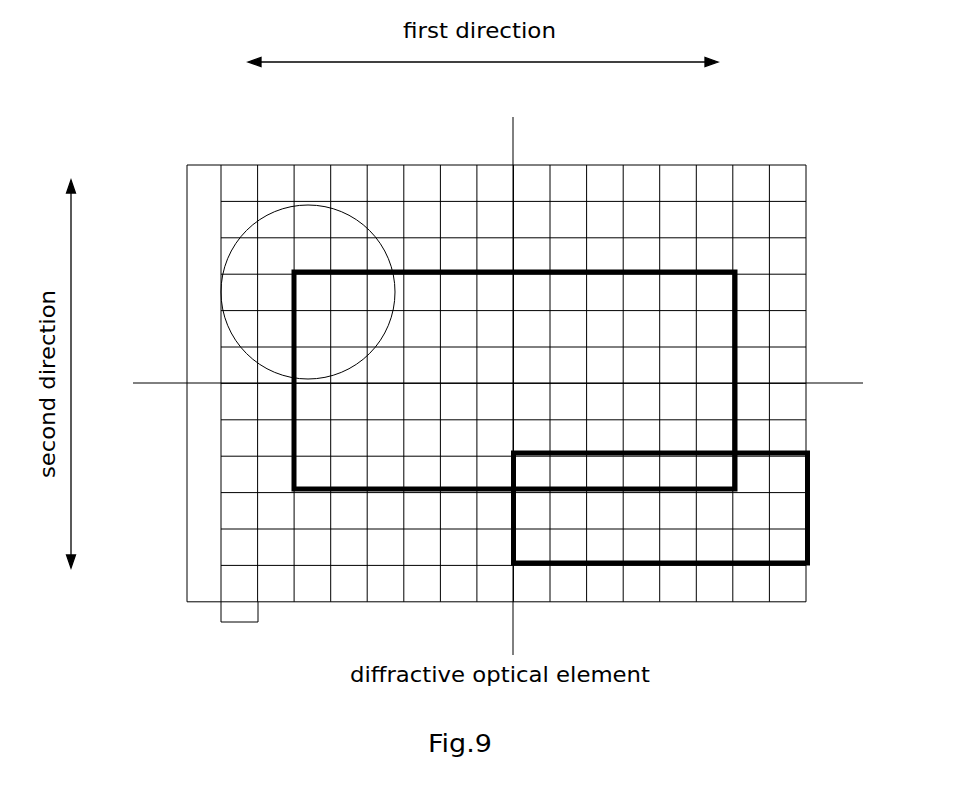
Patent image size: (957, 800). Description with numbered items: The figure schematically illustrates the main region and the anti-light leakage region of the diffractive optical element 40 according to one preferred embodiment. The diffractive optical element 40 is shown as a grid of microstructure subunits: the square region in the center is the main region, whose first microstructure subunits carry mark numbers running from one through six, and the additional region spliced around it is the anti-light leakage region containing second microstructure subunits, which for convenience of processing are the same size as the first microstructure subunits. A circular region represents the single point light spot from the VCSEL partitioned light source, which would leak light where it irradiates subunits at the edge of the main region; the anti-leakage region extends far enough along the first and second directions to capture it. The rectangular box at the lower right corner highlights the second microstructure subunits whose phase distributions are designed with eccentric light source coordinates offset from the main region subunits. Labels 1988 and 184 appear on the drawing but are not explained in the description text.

The diffractive optical element 40 is at (683, 687).
The horizontal axis line 1988 is at (498, 382).
The legend cell 184 is at (239, 612).